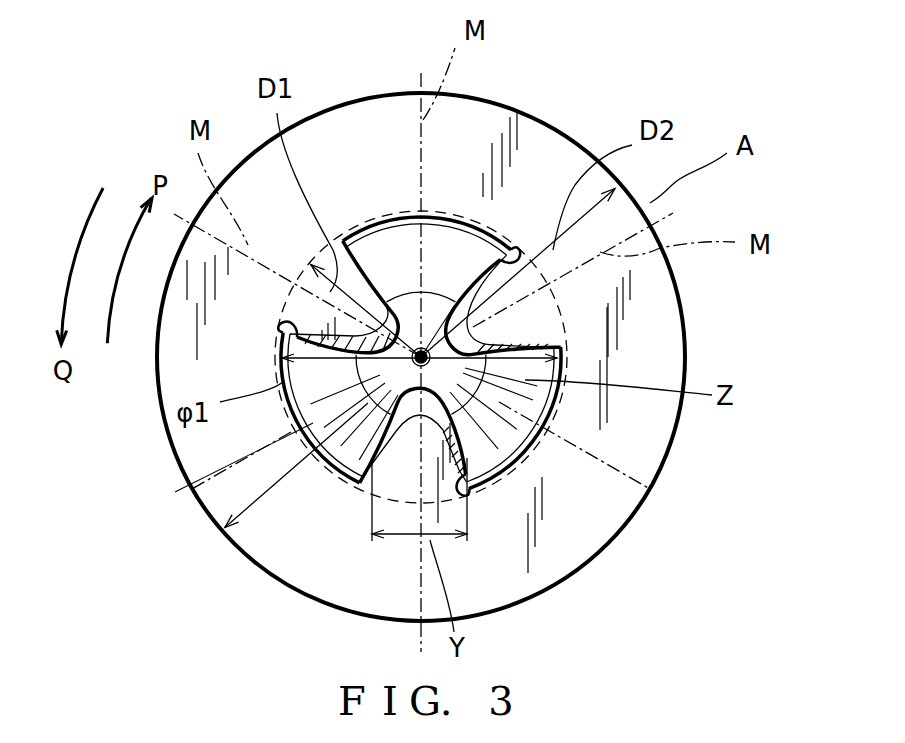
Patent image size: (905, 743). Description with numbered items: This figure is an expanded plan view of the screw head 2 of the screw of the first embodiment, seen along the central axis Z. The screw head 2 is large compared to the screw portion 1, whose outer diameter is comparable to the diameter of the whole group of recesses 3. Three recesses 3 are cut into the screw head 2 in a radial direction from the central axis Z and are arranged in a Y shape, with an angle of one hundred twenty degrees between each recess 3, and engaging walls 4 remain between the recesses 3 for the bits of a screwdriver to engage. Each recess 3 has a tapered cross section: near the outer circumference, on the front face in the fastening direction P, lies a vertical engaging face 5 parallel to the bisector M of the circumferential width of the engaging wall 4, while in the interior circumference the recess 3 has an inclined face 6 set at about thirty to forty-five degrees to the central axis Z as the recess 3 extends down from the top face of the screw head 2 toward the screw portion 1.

The screw portion 1 is at (347, 487).
The screw head 2 is at (636, 320).
The recess 3 is at (443, 243).
The engaging wall 4 is at (265, 325).
The vertical engaging face 5 is at (515, 260).
The inclined face 6 is at (372, 218).